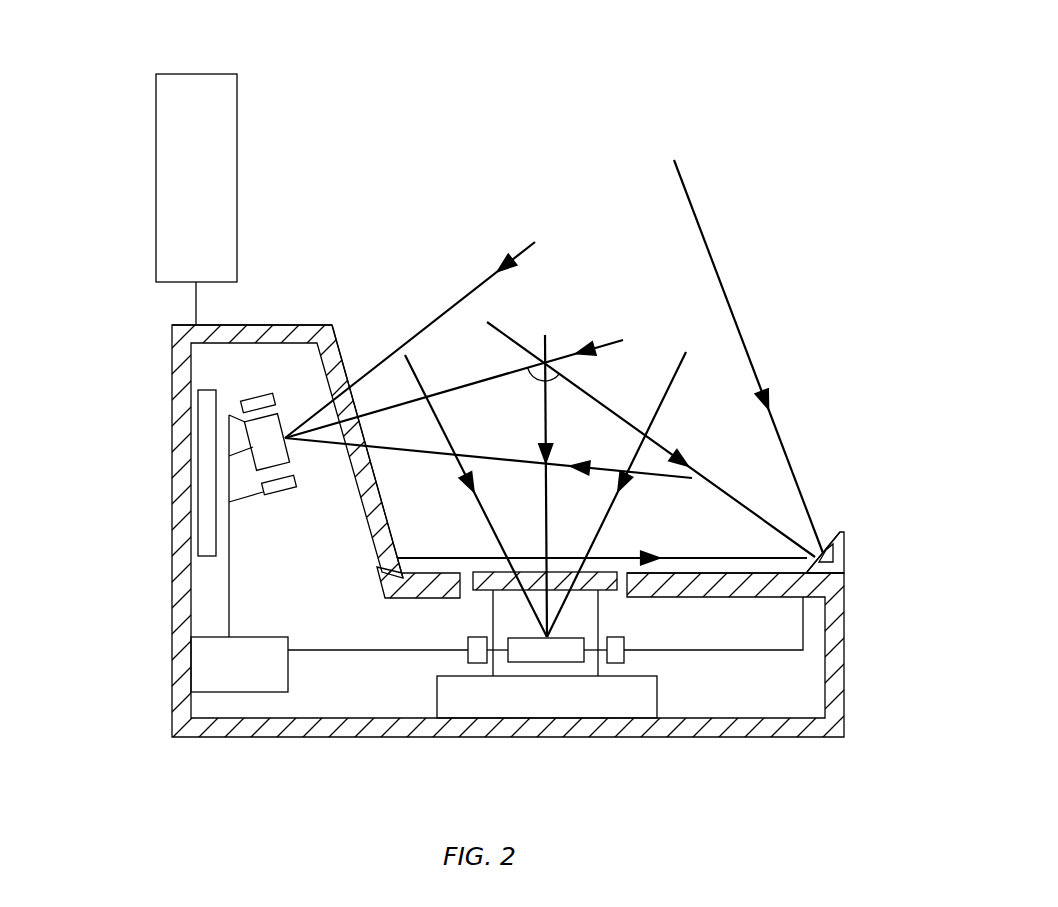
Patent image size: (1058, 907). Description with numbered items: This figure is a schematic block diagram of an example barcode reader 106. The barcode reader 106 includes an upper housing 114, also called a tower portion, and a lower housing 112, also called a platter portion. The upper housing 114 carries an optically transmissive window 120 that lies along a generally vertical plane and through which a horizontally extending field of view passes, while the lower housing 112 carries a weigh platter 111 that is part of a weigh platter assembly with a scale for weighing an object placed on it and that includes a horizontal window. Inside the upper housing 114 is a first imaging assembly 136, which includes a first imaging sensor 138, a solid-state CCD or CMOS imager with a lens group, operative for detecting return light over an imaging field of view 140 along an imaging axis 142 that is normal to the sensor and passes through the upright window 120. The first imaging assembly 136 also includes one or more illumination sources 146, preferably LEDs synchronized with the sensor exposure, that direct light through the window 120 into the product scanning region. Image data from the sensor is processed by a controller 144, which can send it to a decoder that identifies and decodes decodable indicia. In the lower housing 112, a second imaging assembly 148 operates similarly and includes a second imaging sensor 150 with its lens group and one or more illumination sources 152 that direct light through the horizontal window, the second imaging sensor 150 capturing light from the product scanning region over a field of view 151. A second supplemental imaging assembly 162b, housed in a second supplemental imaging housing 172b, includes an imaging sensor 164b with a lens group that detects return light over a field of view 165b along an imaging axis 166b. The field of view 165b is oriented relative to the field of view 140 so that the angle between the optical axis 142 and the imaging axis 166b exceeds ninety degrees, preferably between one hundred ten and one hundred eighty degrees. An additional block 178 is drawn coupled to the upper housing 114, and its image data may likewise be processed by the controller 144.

The barcode reader 106 is at (147, 298).
The controller 178 is at (155, 177).
The upper housing 114 is at (278, 323).
The optically transmissive window 120 is at (340, 348).
The lower housing 112 is at (845, 653).
The weigh platter 111 is at (693, 590).
The first imaging assembly 136 is at (250, 462).
The first imaging sensor 138 is at (263, 428).
The illumination sources 146 is at (258, 398).
The controller 144 is at (207, 672).
The second imaging assembly 148 is at (578, 653).
The second imaging sensor 150 is at (517, 653).
The illumination sources 152 is at (468, 645).
The imaging field of view 140 is at (485, 282).
The imaging axis 142 is at (467, 383).
The field of view 151 is at (667, 392).
The field of view 165b is at (697, 217).
The imaging axis 166b is at (502, 332).
The second supplemental imaging assembly 162b is at (832, 534).
The second supplemental imaging housing 172b is at (843, 533).
The imaging sensor 164b is at (835, 555).